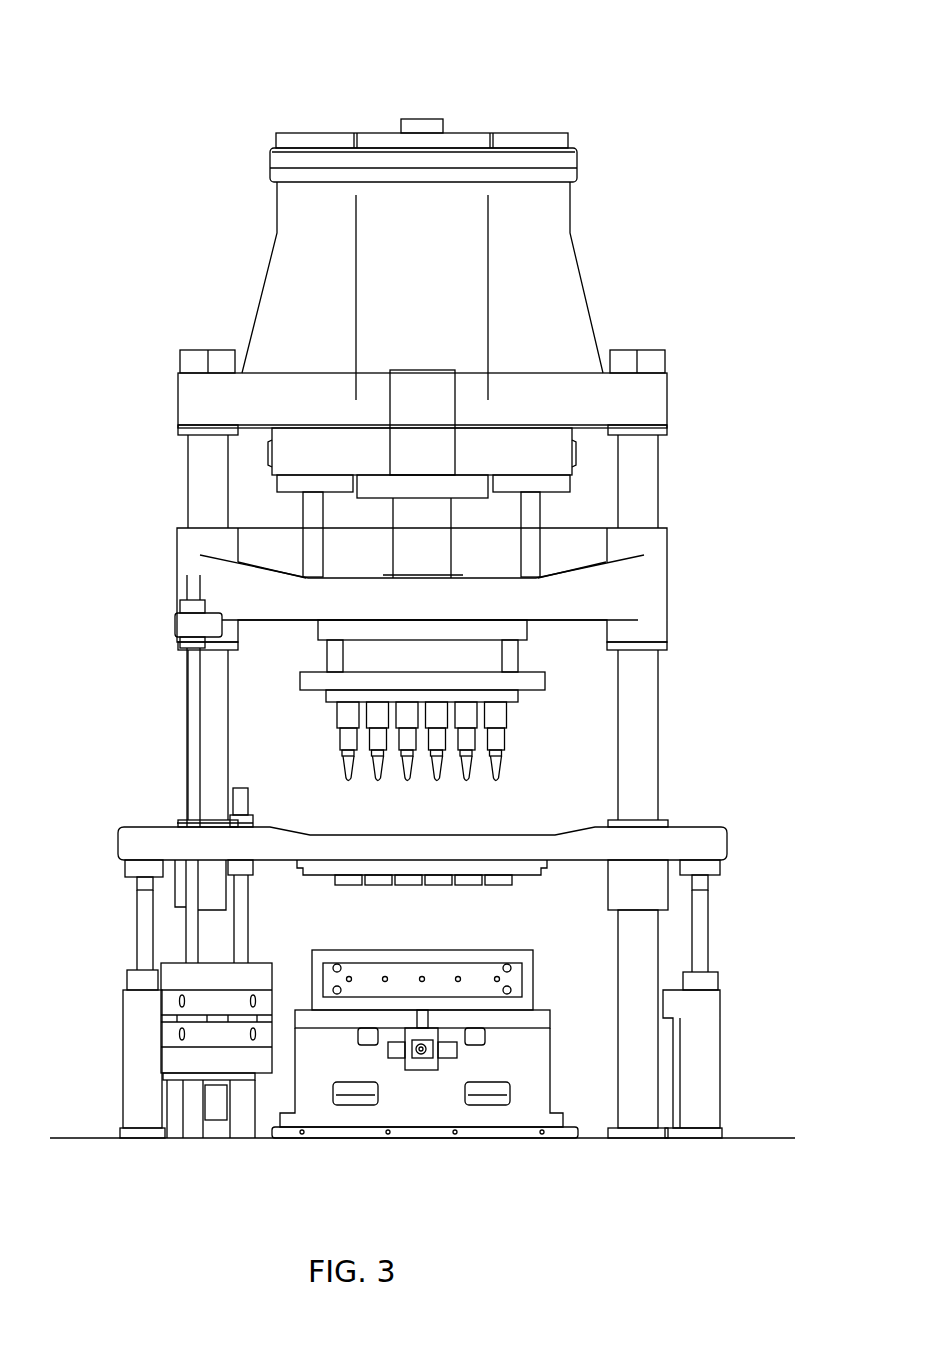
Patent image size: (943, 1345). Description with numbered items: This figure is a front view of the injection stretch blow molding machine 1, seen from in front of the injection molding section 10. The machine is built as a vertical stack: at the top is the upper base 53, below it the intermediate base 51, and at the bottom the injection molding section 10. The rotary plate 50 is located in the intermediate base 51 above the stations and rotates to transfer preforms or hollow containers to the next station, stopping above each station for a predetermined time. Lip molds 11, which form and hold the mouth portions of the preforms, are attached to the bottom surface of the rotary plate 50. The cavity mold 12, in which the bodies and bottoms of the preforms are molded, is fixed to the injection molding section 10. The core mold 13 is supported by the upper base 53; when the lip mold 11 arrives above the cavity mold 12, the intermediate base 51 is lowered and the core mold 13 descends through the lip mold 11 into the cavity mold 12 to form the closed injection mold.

The injection stretch blow molding machine 1 is at (597, 92).
The injection molding section 10 is at (558, 955).
The lip mold 11 is at (378, 887).
The cavity mold 12 is at (537, 968).
The core mold 13 is at (502, 773).
The rotary plate 50 is at (575, 862).
The intermediate base 51 is at (128, 832).
The upper base 53 is at (645, 592).